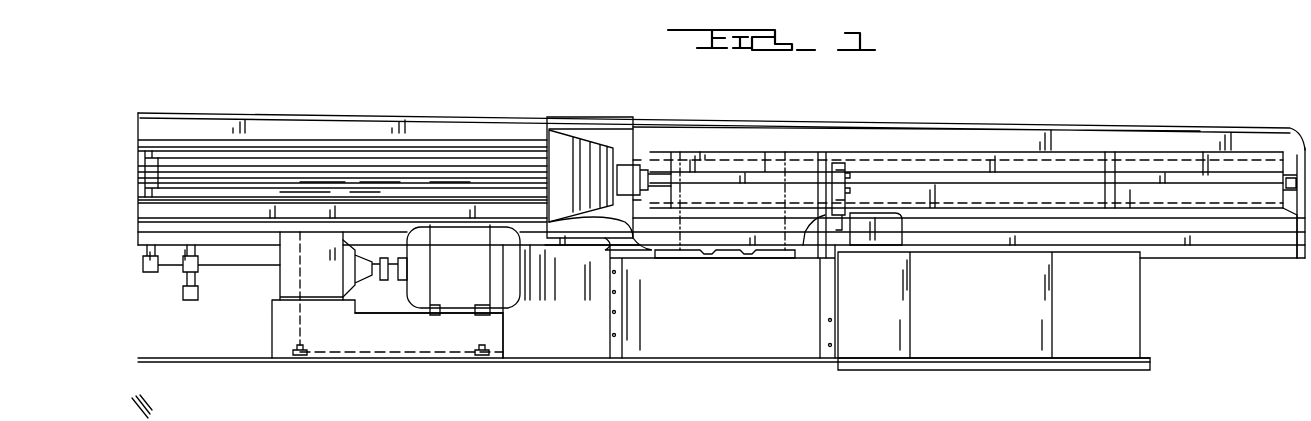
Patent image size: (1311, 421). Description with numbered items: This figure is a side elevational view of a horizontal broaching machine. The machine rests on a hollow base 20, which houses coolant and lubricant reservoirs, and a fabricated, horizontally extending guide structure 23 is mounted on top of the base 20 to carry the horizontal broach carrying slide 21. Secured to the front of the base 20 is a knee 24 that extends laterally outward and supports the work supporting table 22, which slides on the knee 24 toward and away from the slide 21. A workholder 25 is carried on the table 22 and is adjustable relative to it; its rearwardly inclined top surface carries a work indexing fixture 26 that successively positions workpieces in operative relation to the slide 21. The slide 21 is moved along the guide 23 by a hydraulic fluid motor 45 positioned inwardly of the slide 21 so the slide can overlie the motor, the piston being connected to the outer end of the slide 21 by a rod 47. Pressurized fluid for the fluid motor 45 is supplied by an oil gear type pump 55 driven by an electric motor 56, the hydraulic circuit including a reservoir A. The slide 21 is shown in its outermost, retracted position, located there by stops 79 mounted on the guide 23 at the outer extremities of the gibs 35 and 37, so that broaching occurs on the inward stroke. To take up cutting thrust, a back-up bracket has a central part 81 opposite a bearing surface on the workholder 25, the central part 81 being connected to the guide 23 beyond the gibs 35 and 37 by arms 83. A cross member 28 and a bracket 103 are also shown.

The base 20 is at (1022, 350).
The horizontal broach carrying slide 21 is at (1212, 175).
The work supporting table 22 is at (760, 262).
The guide structure 23 is at (1300, 237).
The knee 24 is at (800, 350).
The workholder 25 is at (681, 250).
The work indexing fixture 26 is at (791, 165).
The cross member 28 is at (1098, 182).
The gib 35 is at (1252, 228).
The top gib 37 is at (1160, 152).
The fluid motor 45 is at (479, 175).
The rod 47 is at (1240, 258).
The oil gear type pump 55 is at (287, 280).
The electric motor 56 is at (476, 275).
The stops 79 is at (1297, 152).
The central part 81 is at (630, 157).
The arms 83 is at (602, 126).
The bracket 103 is at (851, 185).
The reservoir A is at (442, 340).